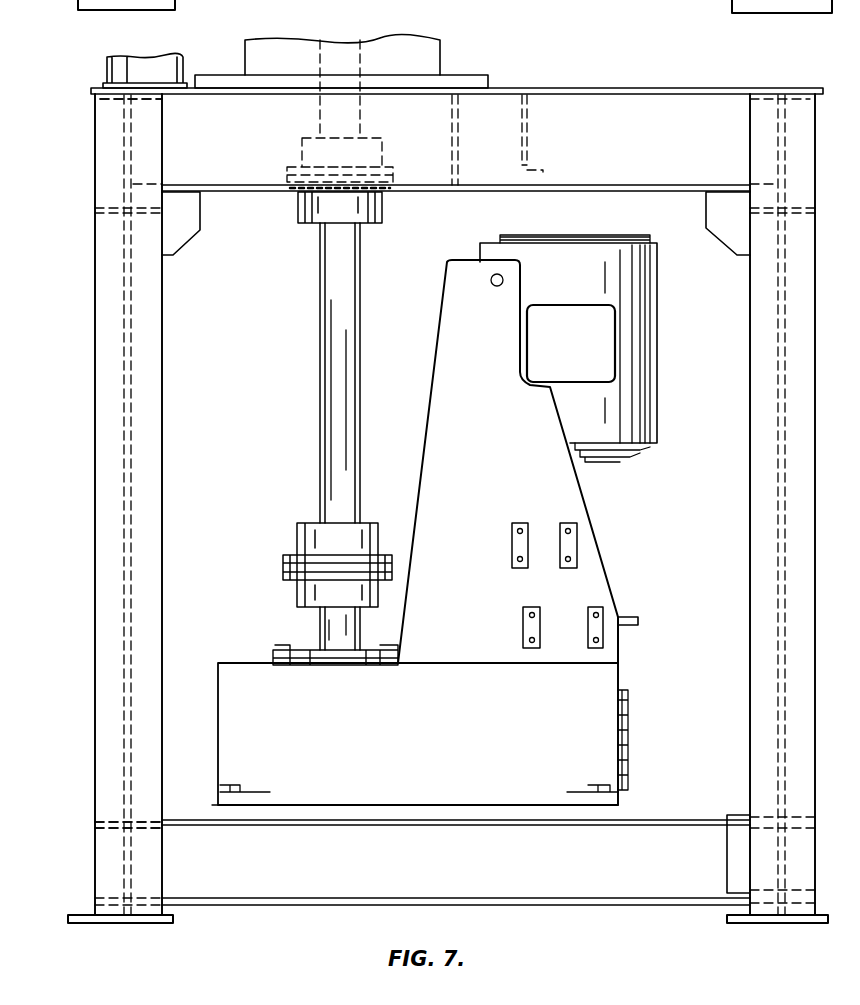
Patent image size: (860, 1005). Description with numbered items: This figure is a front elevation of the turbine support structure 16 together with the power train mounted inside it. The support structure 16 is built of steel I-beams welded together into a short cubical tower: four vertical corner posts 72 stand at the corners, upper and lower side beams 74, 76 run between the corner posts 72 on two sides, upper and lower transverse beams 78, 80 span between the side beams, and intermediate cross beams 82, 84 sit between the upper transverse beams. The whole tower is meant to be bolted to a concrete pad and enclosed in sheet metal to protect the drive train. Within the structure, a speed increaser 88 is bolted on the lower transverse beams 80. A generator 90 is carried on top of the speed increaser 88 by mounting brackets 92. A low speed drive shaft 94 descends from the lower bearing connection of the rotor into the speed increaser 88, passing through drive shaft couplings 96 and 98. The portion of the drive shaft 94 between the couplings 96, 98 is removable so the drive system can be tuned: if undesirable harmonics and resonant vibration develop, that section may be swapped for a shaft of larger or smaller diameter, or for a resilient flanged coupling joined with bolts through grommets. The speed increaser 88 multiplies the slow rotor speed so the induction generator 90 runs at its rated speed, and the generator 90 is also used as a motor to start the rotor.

The turbine support structure 16 is at (88, 358).
The vertical corner posts 72 is at (97, 633).
The upper side beam 74 is at (120, 97).
The lower side beam 76 is at (100, 830).
The upper transverse beam 78 is at (621, 88).
The lower transverse beam 80 is at (630, 893).
The intermediate cross beam 82 is at (240, 128).
The intermediate cross beam 84 is at (457, 133).
The speed increaser 88 is at (358, 740).
The generator 90 is at (657, 367).
The mounting brackets 92 is at (598, 542).
The low speed drive shaft 94 is at (320, 393).
The drive shaft coupling 96 is at (382, 210).
The drive shaft coupling 98 is at (367, 520).